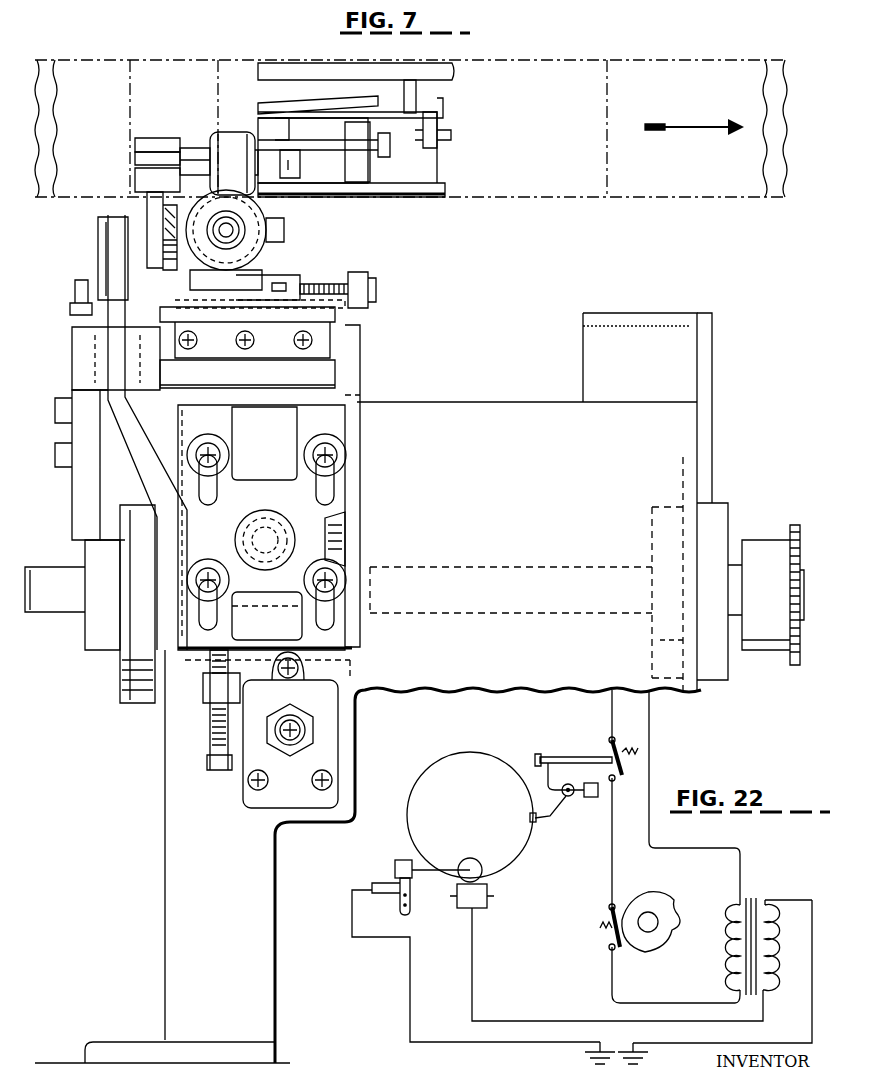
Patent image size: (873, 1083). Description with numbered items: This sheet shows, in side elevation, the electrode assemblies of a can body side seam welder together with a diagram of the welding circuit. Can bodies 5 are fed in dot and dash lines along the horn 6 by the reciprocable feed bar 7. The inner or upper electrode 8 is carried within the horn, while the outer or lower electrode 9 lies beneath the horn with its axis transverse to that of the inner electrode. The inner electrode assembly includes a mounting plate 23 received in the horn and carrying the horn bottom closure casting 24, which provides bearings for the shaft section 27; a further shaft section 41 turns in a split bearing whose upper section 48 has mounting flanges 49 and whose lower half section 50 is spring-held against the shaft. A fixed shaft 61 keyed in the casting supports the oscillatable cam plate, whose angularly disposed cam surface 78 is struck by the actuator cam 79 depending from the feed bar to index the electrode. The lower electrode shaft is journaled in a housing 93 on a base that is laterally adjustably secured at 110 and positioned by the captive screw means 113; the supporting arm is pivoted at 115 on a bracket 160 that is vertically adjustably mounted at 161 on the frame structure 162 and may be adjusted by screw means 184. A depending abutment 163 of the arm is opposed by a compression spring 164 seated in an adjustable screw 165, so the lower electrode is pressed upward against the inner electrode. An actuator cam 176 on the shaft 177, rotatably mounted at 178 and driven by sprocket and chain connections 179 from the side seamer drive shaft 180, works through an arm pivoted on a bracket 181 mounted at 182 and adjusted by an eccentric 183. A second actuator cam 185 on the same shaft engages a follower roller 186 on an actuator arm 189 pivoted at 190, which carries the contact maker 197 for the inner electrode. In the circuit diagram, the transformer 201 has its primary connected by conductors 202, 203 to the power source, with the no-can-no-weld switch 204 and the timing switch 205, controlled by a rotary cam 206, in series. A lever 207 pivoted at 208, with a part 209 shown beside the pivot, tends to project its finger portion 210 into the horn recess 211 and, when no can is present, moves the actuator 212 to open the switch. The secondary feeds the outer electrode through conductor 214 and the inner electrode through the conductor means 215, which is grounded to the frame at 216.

In FIG. 7, the can bodies 5 is at (502, 197).
In FIG. 7, the horn 6 is at (572, 200).
In FIG. 22, the horn 6 is at (471, 772).
In FIG. 7, the reciprocable feed bar 7 is at (455, 66).
In FIG. 7, the inner or upper electrode 8 is at (232, 130).
In FIG. 22, the inner or upper electrode 8 is at (474, 862).
In FIG. 7, the outer or lower electrode 9 is at (200, 205).
In FIG. 22, the outer or lower electrode 9 is at (483, 908).
In FIG. 7, the mounting plate 23 is at (335, 150).
In FIG. 7, the horn bottom closure member or casting 24 is at (418, 197).
In FIG. 7, the shaft section 27 is at (292, 172).
In FIG. 7, the shaft section 41 is at (190, 148).
In FIG. 7, the upper section of split bearing 48 is at (140, 157).
In FIG. 7, the mounting flanges 49 is at (145, 142).
In FIG. 7, the lower half section of split bearing 50 is at (140, 176).
In FIG. 22, the lower half section of split bearing 50 is at (395, 868).
In FIG. 7, the fixed shaft 61 is at (445, 140).
In FIG. 7, the active angularly disposed cam surface 78 is at (323, 103).
In FIG. 7, the actuator cam 79 is at (416, 90).
In FIG. 7, the housing 93 is at (262, 252).
In FIG. 7, the lateral adjustable securing means 110 is at (280, 290).
In FIG. 7, the captive screw means 113 is at (368, 287).
In FIG. 7, the pivotal support 115 is at (318, 374).
In FIG. 7, the bracket 160 is at (350, 452).
In FIG. 7, the vertically adjustable mounting 161 is at (335, 460).
In FIG. 7, the frame structure 162 is at (545, 408).
In FIG. 7, the depending abutment 163 is at (300, 418).
In FIG. 7, the compression spring 164 is at (338, 531).
In FIG. 7, the adjustably mounted screw 165 is at (283, 545).
In FIG. 7, the actuator cam 176 is at (350, 667).
In FIG. 7, the shaft 177 is at (568, 570).
In FIG. 7, the rotatable mounting 178 is at (160, 655).
In FIG. 7, the sprocket and chain connections 179 is at (804, 522).
In FIG. 22, the side seamer drive shaft 180 is at (648, 912).
In FIG. 7, the bracket 181 is at (278, 800).
In FIG. 7, the vertically adjustable mounting 182 is at (300, 692).
In FIG. 7, the eccentric 183 is at (303, 740).
In FIG. 7, the screw means 184 is at (207, 763).
In FIG. 7, the actuator cam 185 is at (137, 712).
In FIG. 7, the follower roller 186 is at (118, 490).
In FIG. 7, the actuator arm 189 is at (85, 470).
In FIG. 7, the pivot 190 is at (80, 366).
In FIG. 22, the contact maker 197 is at (385, 884).
In FIG. 22, the transformer 201 is at (767, 888).
In FIG. 22, the conductor 202 is at (678, 848).
In FIG. 22, the conductor 203 is at (612, 992).
In FIG. 22, the no-can-no-weld control switch 204 is at (610, 752).
In FIG. 22, the timing switch 205 is at (608, 936).
In FIG. 22, the rotary cam 206 is at (645, 948).
In FIG. 22, the lever 207 is at (552, 780).
In FIG. 22, the pivot 208 is at (562, 800).
In FIG. 22, the block 209 is at (590, 798).
In FIG. 22, the finger portion 210 is at (550, 806).
In FIG. 22, the receiving recess 211 is at (528, 818).
In FIG. 22, the actuator 212 is at (565, 757).
In FIG. 22, the conductor 214 is at (534, 1016).
In FIG. 22, the conductor means 215 is at (410, 986).
In FIG. 22, the ground 216 is at (590, 1058).